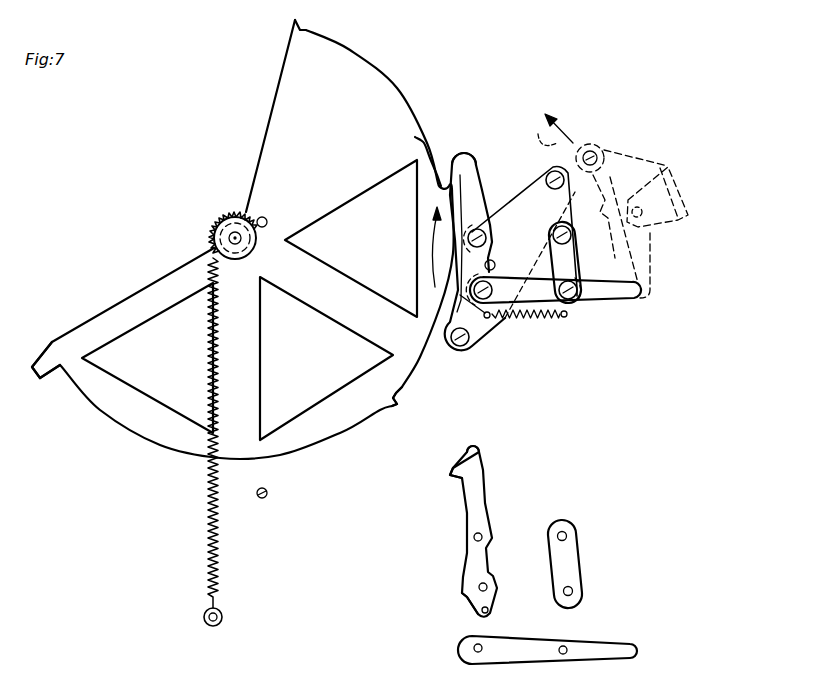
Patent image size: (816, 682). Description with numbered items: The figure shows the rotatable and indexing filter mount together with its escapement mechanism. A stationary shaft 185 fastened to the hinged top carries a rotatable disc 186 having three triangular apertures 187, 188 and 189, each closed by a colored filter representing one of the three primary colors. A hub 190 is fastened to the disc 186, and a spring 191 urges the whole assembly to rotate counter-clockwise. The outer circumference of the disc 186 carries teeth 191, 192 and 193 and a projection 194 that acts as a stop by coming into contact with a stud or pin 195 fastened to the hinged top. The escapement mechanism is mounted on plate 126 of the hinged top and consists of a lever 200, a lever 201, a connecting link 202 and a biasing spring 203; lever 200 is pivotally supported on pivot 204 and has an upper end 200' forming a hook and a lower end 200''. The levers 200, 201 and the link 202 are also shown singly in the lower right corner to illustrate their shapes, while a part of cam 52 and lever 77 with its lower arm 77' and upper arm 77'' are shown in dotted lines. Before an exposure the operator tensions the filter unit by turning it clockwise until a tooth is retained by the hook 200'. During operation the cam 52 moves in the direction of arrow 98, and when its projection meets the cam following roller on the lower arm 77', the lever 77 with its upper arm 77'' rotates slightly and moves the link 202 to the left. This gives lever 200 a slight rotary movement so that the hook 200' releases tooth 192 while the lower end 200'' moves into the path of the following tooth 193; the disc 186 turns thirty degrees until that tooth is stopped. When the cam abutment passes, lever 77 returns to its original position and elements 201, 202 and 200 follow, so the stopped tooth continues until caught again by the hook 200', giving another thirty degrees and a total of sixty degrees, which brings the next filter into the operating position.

The cam 52 is at (537, 133).
The lever 77 is at (668, 193).
The lower arm 77' is at (630, 190).
The upper arm 77'' is at (664, 237).
The arrow 98 is at (562, 124).
The plate 126 is at (524, 191).
The stationary shaft 185 is at (268, 216).
The rotatable disc 186 is at (398, 89).
The triangular aperture 187 is at (138, 388).
The triangular aperture 188 is at (305, 410).
The triangular aperture 189 is at (336, 252).
The hub 190 is at (257, 250).
The spring 191 is at (210, 508).
The tooth 192 is at (410, 158).
The tooth 193 is at (394, 404).
The projection 194 is at (40, 380).
The stud or pin 195 is at (266, 491).
The lever 200 is at (488, 383).
The upper end 200' is at (466, 300).
The lower end 200'' is at (441, 471).
The lever 201 is at (567, 265).
The connecting link 202 is at (595, 301).
The biasing spring 203 is at (523, 320).
The pivot 204 is at (487, 232).